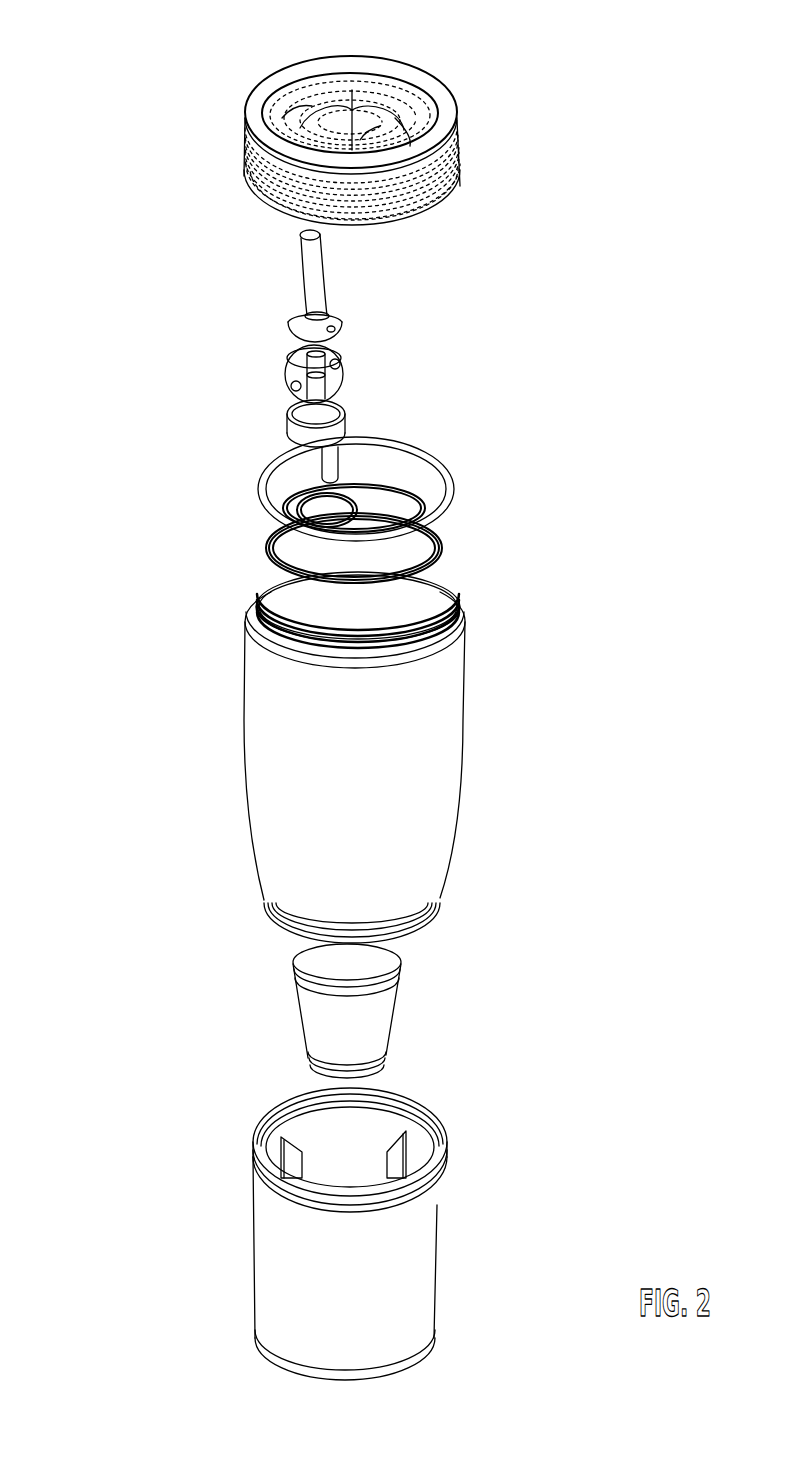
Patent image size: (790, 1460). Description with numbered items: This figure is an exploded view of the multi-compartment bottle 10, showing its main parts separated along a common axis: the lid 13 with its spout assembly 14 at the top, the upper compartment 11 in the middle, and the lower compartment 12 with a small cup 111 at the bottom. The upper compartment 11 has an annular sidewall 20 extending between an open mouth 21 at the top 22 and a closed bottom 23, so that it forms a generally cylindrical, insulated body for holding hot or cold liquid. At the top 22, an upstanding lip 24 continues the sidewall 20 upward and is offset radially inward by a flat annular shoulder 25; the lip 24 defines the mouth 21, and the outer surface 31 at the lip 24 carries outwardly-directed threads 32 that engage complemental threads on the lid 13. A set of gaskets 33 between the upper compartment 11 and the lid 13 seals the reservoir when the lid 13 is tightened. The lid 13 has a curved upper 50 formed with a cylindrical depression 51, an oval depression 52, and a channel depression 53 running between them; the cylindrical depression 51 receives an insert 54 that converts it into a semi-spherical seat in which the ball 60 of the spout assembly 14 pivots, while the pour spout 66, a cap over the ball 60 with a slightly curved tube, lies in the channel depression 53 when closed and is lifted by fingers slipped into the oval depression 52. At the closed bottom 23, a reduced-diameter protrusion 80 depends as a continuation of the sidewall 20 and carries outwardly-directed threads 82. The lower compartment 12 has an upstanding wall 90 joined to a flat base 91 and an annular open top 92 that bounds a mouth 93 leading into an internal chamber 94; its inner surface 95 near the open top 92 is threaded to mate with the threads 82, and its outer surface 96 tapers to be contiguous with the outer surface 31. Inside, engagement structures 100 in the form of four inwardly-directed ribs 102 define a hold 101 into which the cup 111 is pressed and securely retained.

The multi-compartment bottle 10 is at (527, 128).
The upper compartment 11 is at (200, 793).
The lower compartment 12 is at (230, 1288).
The lid 13 is at (330, 117).
The spout assembly 14 is at (132, 228).
The annular sidewall 20 is at (358, 746).
The open mouth 21 is at (428, 580).
The top 22 is at (460, 613).
The closed bottom 23 is at (443, 898).
The upstanding lip 24 is at (262, 572).
The annular shoulder 25 is at (250, 614).
The outer surface 31 is at (418, 728).
The threads 32 is at (286, 633).
The gaskets 33 is at (267, 532).
The curved upper 50 is at (383, 90).
The cylindrical depression 51 is at (300, 100).
The oval depression 52 is at (393, 117).
The channel depression 53 is at (377, 112).
The insert 54 is at (348, 425).
The ball 60 is at (343, 368).
The pour spout 66 is at (342, 313).
The reduced-diameter protrusion 80 is at (287, 931).
The threads 82 is at (406, 935).
The upstanding wall 90 is at (349, 1227).
The flat base 91 is at (413, 1360).
The open top 92 is at (448, 1148).
The mouth 93 is at (392, 1112).
The internal chamber 94 is at (320, 1128).
The inner surface 95 is at (339, 1176).
The outer surface 96 is at (339, 1245).
The engagement structures 100 is at (262, 1180).
The hold 101 is at (313, 1168).
The inwardly-directed ribs 102 is at (400, 1153).
The cup 111 is at (370, 1030).